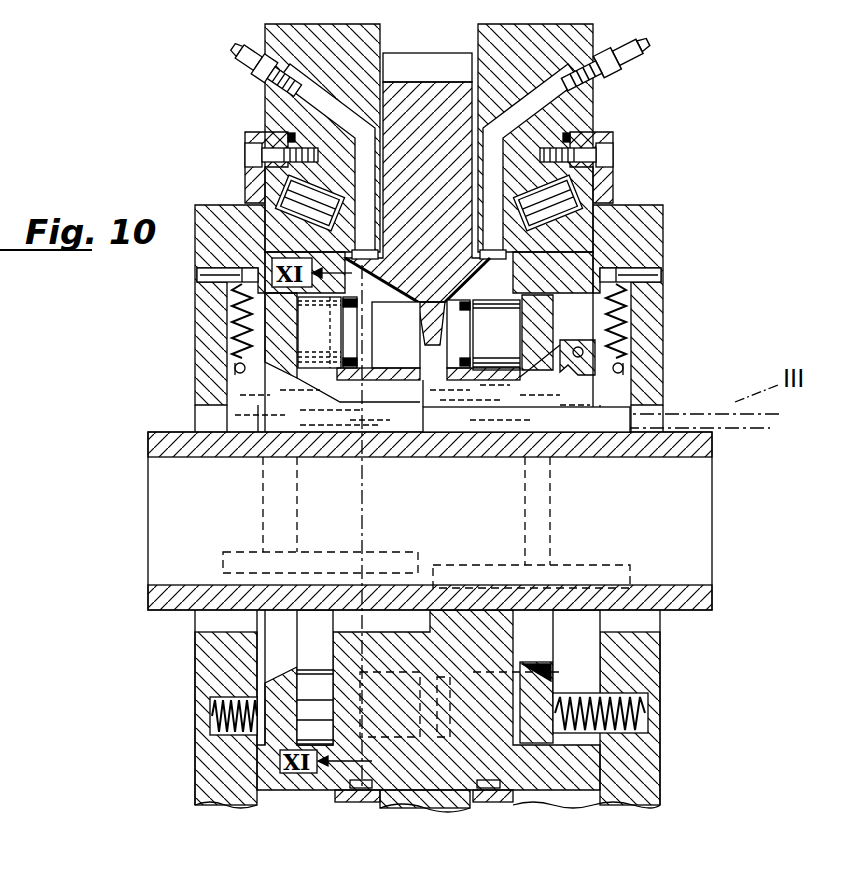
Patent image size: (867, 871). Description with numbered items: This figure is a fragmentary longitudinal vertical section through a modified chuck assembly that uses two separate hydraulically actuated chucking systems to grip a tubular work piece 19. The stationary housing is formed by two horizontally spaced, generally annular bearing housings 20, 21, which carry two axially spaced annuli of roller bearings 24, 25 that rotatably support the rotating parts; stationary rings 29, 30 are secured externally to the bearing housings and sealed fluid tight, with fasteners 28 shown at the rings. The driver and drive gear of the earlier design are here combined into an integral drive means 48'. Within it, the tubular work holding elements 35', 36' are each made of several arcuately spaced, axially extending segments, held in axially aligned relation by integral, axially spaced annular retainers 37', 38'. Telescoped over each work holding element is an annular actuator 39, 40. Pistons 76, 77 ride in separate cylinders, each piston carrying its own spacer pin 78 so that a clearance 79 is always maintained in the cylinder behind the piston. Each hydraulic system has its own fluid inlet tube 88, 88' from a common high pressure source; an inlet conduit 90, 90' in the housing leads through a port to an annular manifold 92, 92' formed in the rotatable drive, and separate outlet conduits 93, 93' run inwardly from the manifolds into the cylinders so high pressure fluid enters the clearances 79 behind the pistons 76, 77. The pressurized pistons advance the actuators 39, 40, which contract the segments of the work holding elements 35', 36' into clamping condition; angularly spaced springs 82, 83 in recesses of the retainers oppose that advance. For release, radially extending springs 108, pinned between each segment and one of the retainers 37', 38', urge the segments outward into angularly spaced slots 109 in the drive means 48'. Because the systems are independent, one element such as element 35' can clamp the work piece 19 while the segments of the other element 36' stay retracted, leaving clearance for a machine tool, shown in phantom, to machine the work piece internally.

The work piece 19 is at (148, 512).
The bearing housing 20 is at (300, 33).
The bearing housing 21 is at (598, 30).
The roller bearings 24 is at (302, 200).
The roller bearings 25 is at (612, 180).
The bolt 28 is at (250, 153).
The stationary ring 29 is at (245, 136).
The stationary ring 30 is at (610, 133).
The work holding element 35' is at (320, 515).
The work holding element 36' is at (531, 495).
The annular retainer 37' is at (186, 506).
The annular retainer 38' is at (632, 505).
The annular actuator 39 is at (278, 330).
The annular actuator 40 is at (550, 326).
The integral drive means 48' is at (417, 429).
The piston 76 is at (326, 334).
The piston 77 is at (503, 337).
The spacer pin 78 is at (440, 483).
The clearance 79 is at (432, 300).
The spring 82 is at (210, 712).
The spring 83 is at (642, 710).
The fluid inlet tube 88 is at (228, 71).
The fluid inlet tube 88' is at (635, 63).
The inlet conduit 90 is at (291, 158).
The inlet conduit 90' is at (568, 158).
The annular manifold 92 is at (347, 523).
The annular manifold 92' is at (520, 523).
The outlet conduit 93 is at (385, 274).
The outlet conduit 93' is at (494, 280).
The spring 108 is at (242, 288).
The slot 109 is at (418, 358).